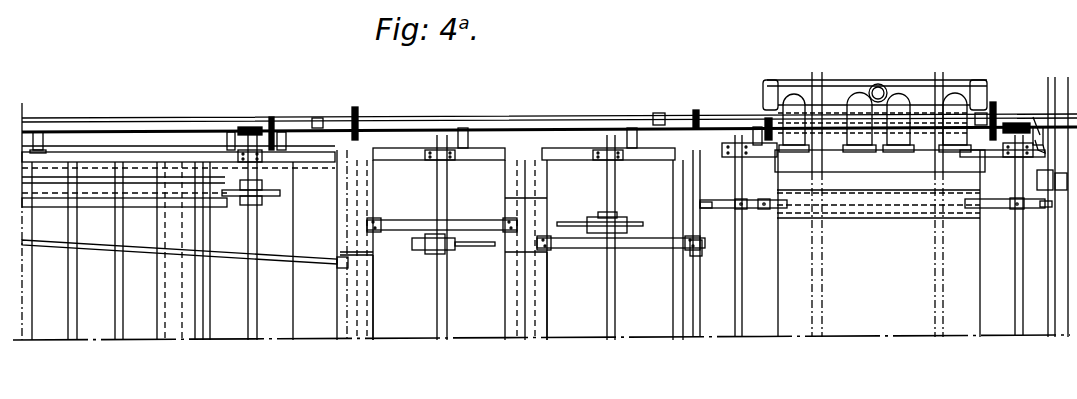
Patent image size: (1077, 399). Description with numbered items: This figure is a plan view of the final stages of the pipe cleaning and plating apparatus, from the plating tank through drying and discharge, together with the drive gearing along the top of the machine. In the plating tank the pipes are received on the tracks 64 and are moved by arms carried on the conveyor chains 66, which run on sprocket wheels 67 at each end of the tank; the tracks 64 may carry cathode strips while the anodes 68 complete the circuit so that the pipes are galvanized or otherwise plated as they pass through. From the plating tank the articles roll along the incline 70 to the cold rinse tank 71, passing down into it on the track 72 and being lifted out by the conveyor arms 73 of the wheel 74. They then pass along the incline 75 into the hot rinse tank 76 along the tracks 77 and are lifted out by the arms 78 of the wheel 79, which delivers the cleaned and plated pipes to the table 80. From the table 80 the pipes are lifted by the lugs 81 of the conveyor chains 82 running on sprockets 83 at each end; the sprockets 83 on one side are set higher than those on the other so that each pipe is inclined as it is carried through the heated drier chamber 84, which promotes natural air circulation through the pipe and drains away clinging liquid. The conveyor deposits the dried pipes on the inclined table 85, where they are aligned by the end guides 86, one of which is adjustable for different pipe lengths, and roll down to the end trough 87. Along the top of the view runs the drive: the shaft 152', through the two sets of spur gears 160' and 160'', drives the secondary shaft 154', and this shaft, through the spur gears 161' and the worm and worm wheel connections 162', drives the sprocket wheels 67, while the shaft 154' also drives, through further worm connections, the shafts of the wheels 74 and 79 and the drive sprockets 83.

The shaft 152' is at (549, 84).
The secondary shaft 154' is at (549, 132).
The worm and worm wheel connections 162' is at (254, 107).
The spur gears 161' is at (291, 114).
The spur gears 160' is at (368, 107).
The spur gears 160'' is at (1012, 106).
The end guides 86 is at (1040, 145).
The inclined table 85 is at (1045, 185).
The end trough 87 is at (1060, 240).
The sprocket wheels 67 is at (280, 192).
The conveyor chains 66 is at (98, 207).
The tracks 64 is at (53, 247).
The anodes 68 is at (102, 330).
The cold rinse tank 71 is at (477, 159).
The hot rinse tank 76 is at (652, 159).
The track 72 is at (397, 221).
The wheel 74 is at (443, 247).
The conveyor arms 73 is at (480, 247).
The incline 70 is at (372, 303).
The incline 75 is at (543, 280).
The arms 78 is at (567, 222).
The wheel 79 is at (620, 217).
The tracks 77 is at (655, 249).
The table 80 is at (694, 251).
The conveyor chains 82 is at (756, 210).
The sprockets 83 is at (763, 202).
The lugs 81 is at (705, 201).
The drier chamber 84 is at (782, 272).